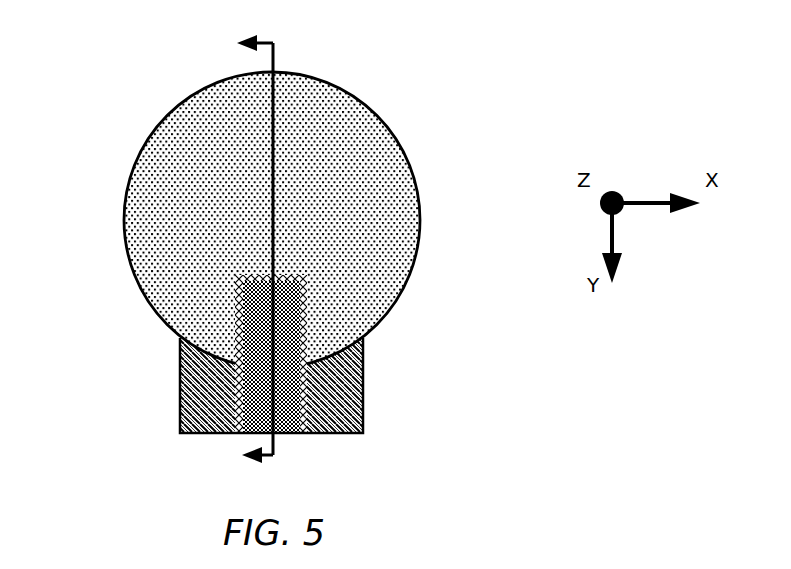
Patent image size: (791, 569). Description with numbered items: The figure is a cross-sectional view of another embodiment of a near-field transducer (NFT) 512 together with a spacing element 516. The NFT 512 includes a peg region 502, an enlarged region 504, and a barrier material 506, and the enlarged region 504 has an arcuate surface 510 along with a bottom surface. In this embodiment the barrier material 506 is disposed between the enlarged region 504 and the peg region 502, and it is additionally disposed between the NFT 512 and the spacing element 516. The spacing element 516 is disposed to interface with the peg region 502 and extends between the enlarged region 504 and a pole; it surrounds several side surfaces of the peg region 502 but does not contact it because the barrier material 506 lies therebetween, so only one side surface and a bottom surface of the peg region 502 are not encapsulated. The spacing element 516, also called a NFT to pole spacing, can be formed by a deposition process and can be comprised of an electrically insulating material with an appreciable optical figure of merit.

The peg region 502 is at (283, 415).
The enlarged region 504 is at (320, 112).
The barrier material 506 is at (238, 388).
The arcuate surface 510 is at (152, 140).
The near-field transducer 512 is at (133, 69).
The spacing element 516 is at (347, 390).